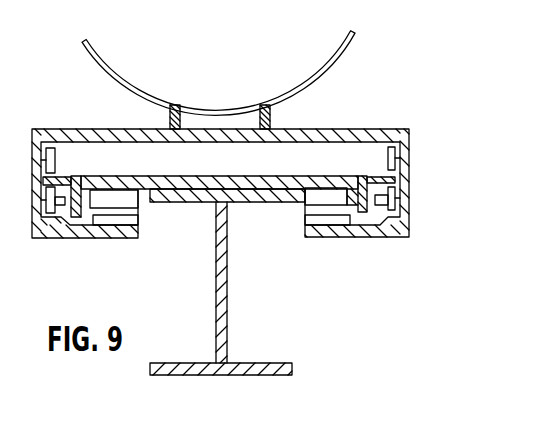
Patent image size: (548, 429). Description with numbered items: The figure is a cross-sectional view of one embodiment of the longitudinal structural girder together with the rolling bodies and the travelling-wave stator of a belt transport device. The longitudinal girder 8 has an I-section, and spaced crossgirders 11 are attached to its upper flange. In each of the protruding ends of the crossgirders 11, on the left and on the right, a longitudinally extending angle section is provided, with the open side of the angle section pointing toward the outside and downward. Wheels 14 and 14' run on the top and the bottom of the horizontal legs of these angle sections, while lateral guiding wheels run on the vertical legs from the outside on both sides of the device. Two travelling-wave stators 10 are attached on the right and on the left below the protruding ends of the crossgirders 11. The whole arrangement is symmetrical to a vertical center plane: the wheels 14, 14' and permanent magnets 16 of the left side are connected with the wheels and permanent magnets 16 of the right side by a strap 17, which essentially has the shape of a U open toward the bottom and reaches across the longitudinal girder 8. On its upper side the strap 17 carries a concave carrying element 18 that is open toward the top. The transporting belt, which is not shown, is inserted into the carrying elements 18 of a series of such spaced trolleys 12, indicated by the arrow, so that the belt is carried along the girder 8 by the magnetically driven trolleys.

The longitudinal girder 8 is at (223, 290).
The travelling-wave stator 10 is at (325, 197).
The crossgirder 11 is at (259, 184).
The trolley 12 is at (324, 104).
The wheel 14 is at (71, 179).
The wheel 14' is at (369, 214).
The permanent magnet 16 is at (325, 217).
The strap 17 is at (110, 134).
The carrying element 18 is at (233, 108).